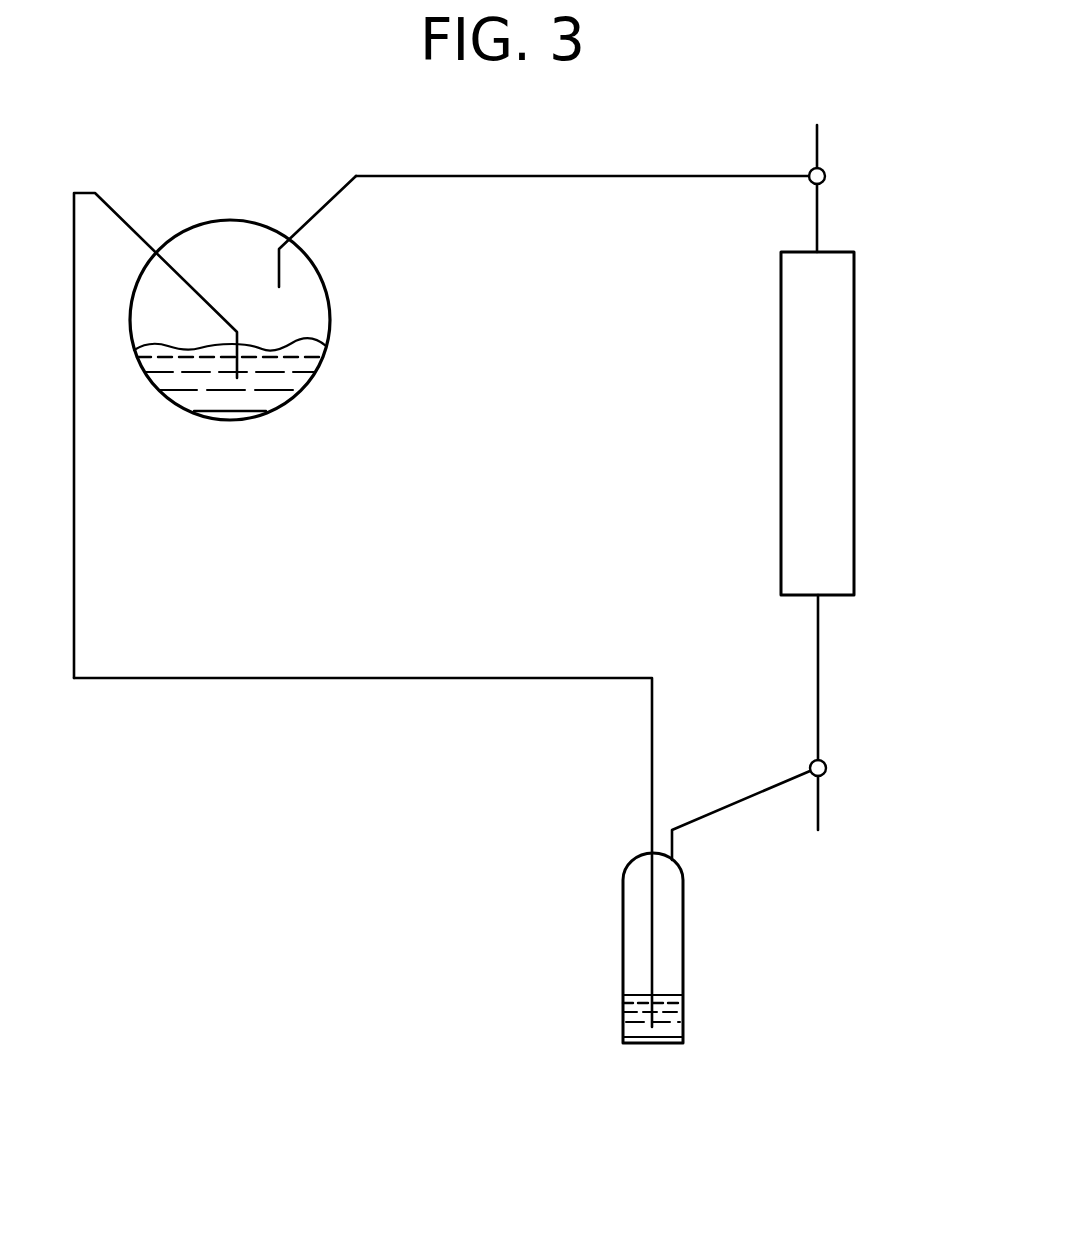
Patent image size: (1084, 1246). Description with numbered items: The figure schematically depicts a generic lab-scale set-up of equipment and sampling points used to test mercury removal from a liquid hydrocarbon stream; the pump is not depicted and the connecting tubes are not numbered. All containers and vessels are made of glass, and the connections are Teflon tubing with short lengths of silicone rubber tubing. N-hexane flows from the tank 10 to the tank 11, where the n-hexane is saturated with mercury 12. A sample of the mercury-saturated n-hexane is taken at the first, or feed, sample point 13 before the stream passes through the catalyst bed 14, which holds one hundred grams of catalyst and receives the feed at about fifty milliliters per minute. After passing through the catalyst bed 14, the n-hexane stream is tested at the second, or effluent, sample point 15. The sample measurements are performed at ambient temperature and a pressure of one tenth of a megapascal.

The tank 10 is at (241, 436).
The tank 11 is at (602, 896).
The mercury 12 is at (685, 1020).
The first (feed) sample point 13 is at (846, 768).
The catalyst bed 14 is at (781, 408).
The second (effluent) sample point 15 is at (823, 168).